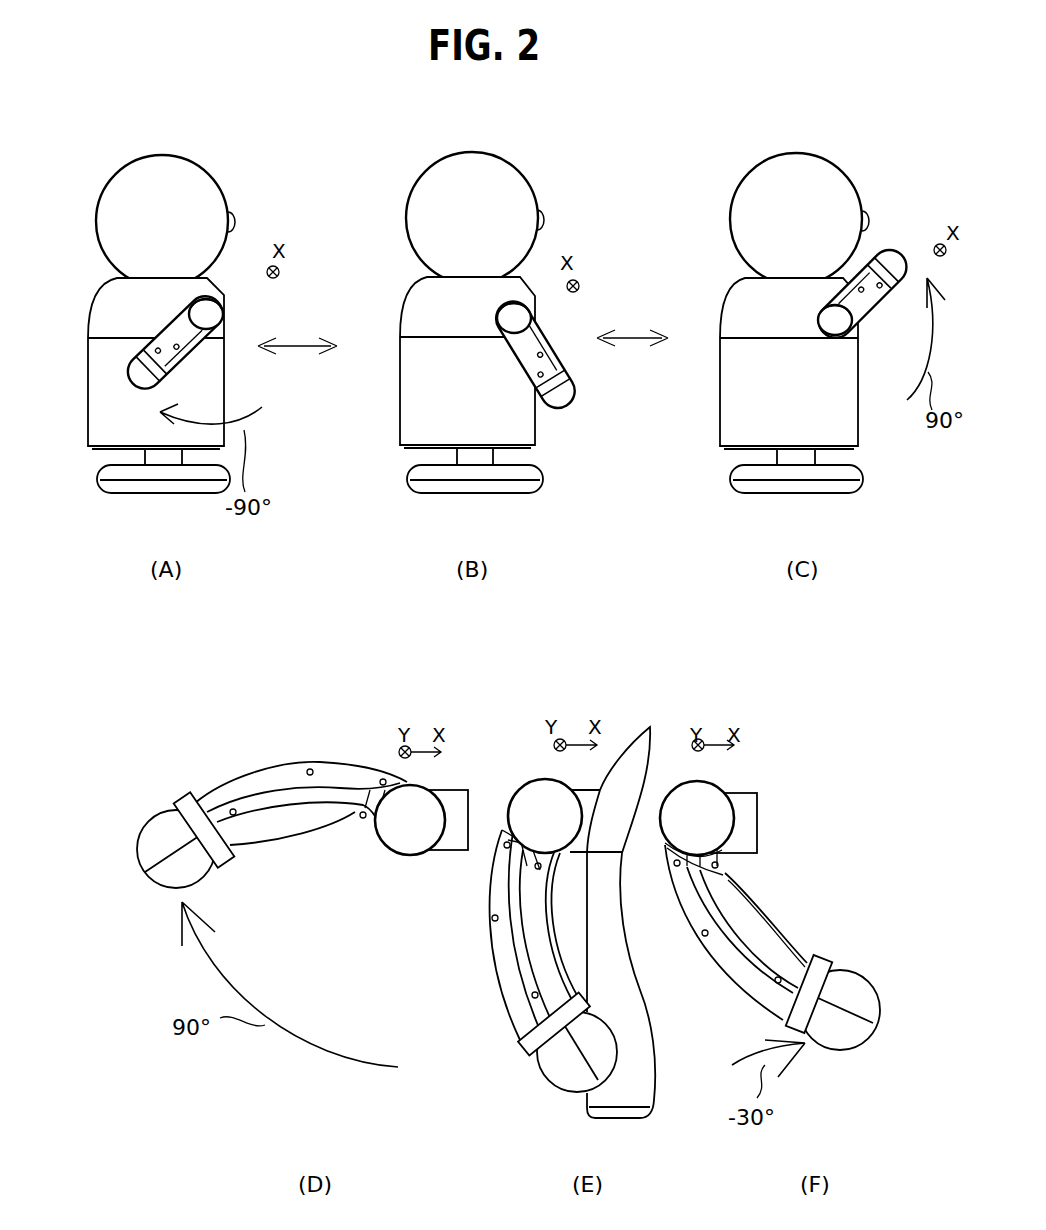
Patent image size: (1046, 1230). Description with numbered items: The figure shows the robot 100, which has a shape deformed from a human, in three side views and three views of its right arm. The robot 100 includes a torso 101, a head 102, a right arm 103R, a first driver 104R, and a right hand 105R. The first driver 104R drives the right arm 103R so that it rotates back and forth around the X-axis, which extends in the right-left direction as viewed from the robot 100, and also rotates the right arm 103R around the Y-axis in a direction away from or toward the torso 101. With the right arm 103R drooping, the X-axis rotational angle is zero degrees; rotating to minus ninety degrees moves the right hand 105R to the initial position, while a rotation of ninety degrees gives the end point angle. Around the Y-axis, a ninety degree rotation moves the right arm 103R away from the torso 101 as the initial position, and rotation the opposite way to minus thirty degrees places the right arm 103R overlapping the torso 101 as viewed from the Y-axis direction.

The robot 100 is at (110, 142).
The torso 101 is at (224, 292).
The head 102 is at (200, 162).
The right arm 103R is at (148, 352).
The first driver 104R is at (189, 308).
The right hand 105R is at (130, 398).